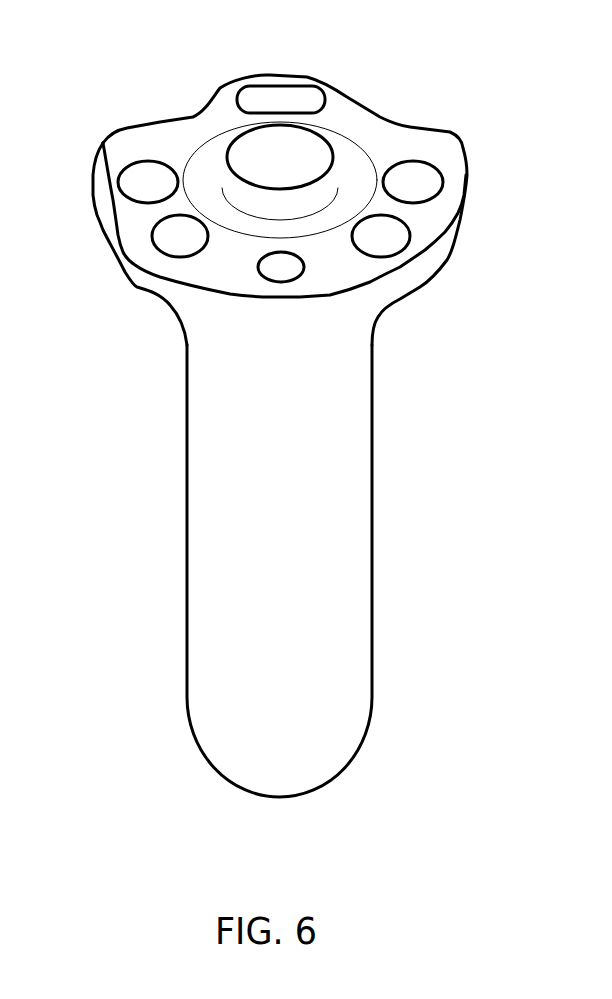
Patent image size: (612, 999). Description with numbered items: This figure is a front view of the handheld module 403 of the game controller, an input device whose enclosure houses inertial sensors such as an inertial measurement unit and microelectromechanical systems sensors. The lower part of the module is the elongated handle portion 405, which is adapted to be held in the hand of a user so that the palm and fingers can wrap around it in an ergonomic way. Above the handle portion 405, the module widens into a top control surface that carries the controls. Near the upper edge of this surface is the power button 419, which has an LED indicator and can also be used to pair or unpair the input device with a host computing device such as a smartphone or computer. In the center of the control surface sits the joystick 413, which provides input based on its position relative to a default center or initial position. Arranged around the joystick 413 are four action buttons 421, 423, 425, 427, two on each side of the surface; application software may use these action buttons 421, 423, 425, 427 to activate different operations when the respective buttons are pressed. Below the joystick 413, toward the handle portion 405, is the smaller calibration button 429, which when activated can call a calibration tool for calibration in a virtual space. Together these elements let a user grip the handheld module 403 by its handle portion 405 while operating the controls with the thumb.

The handheld module 403 is at (370, 277).
The handle portion 405 is at (372, 638).
The joystick 413 is at (328, 152).
The power button 419 is at (257, 80).
The action button 421 is at (145, 172).
The action button 423 is at (435, 167).
The action button 425 is at (163, 230).
The action button 427 is at (410, 225).
The calibration button 429 is at (293, 262).